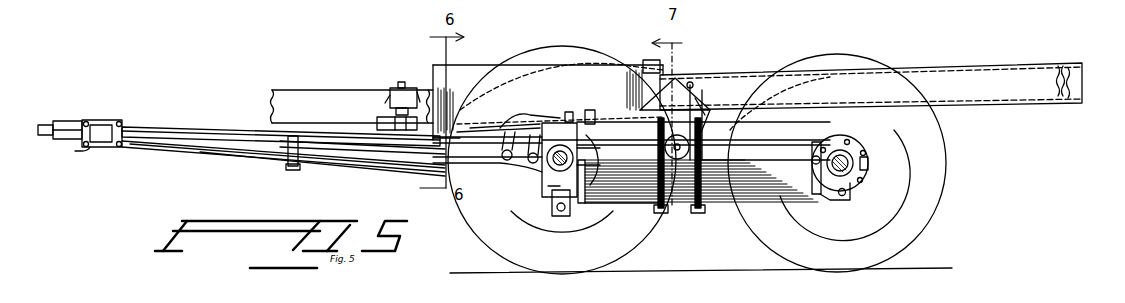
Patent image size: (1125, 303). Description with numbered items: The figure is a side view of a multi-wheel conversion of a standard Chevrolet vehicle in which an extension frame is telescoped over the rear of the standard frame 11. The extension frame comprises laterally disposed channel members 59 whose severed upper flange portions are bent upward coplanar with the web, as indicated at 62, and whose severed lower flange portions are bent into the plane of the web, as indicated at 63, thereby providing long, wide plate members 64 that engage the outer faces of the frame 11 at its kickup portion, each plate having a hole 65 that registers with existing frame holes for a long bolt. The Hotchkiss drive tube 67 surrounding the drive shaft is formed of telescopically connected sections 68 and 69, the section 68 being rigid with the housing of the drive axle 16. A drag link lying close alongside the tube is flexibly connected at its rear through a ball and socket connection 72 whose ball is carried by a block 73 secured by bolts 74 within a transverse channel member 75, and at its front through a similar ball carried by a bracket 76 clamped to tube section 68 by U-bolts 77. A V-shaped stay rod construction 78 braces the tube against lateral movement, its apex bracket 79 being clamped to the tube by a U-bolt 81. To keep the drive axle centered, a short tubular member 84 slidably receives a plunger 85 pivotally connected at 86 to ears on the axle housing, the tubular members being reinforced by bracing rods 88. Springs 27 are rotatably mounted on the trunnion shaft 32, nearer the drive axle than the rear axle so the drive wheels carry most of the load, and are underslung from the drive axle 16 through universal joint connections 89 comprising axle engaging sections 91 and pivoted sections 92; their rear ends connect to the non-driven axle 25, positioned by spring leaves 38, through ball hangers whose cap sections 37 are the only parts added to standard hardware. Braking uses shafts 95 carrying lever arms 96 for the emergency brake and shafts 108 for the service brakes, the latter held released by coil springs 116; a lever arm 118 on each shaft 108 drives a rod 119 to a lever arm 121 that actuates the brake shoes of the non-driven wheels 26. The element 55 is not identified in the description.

The tube section 69 is at (48, 124).
The bracket 76 is at (97, 121).
The U-bolts 77 is at (86, 147).
The tube section 68 is at (128, 126).
The tube 67 is at (246, 140).
The stay rod construction 78 is at (352, 165).
The bracket 79 is at (290, 165).
The U-bolt 81 is at (362, 143).
The frame 11 is at (304, 93).
The bolts 74 is at (402, 80).
The transverse channel member 75 is at (418, 90).
The block 73 is at (394, 90).
The ball and socket connection 72 is at (385, 118).
The plate members 64 is at (515, 68).
The hole 65 is at (562, 78).
The severed upper flange portions 62 is at (642, 62).
The severed lower flange portions 63 is at (450, 140).
The coil springs 116 is at (506, 116).
The lever arm 118 is at (497, 119).
The pivotal connection 86 is at (528, 116).
The plunger 85 is at (570, 112).
The tubular member 84 is at (590, 110).
The lever arm 96 is at (559, 158).
The shafts 95 is at (530, 157).
The sections 92 is at (553, 210).
The axle engaging sections 91 is at (548, 186).
The drive axle 16 is at (580, 158).
The shafts 108 is at (580, 168).
The bracing rods 88 is at (642, 170).
The universal joint connections 89 is at (597, 193).
The springs 27 is at (735, 190).
The wheels 26 is at (705, 136).
The frame 55 is at (687, 80).
The trunnion shaft 32 is at (707, 103).
The rod 119 is at (748, 125).
The spring leaves 38 is at (756, 165).
The channel members 59 is at (930, 75).
The axle 25 is at (870, 160).
The cap section 37 is at (845, 141).
The lever arm 121 is at (828, 190).